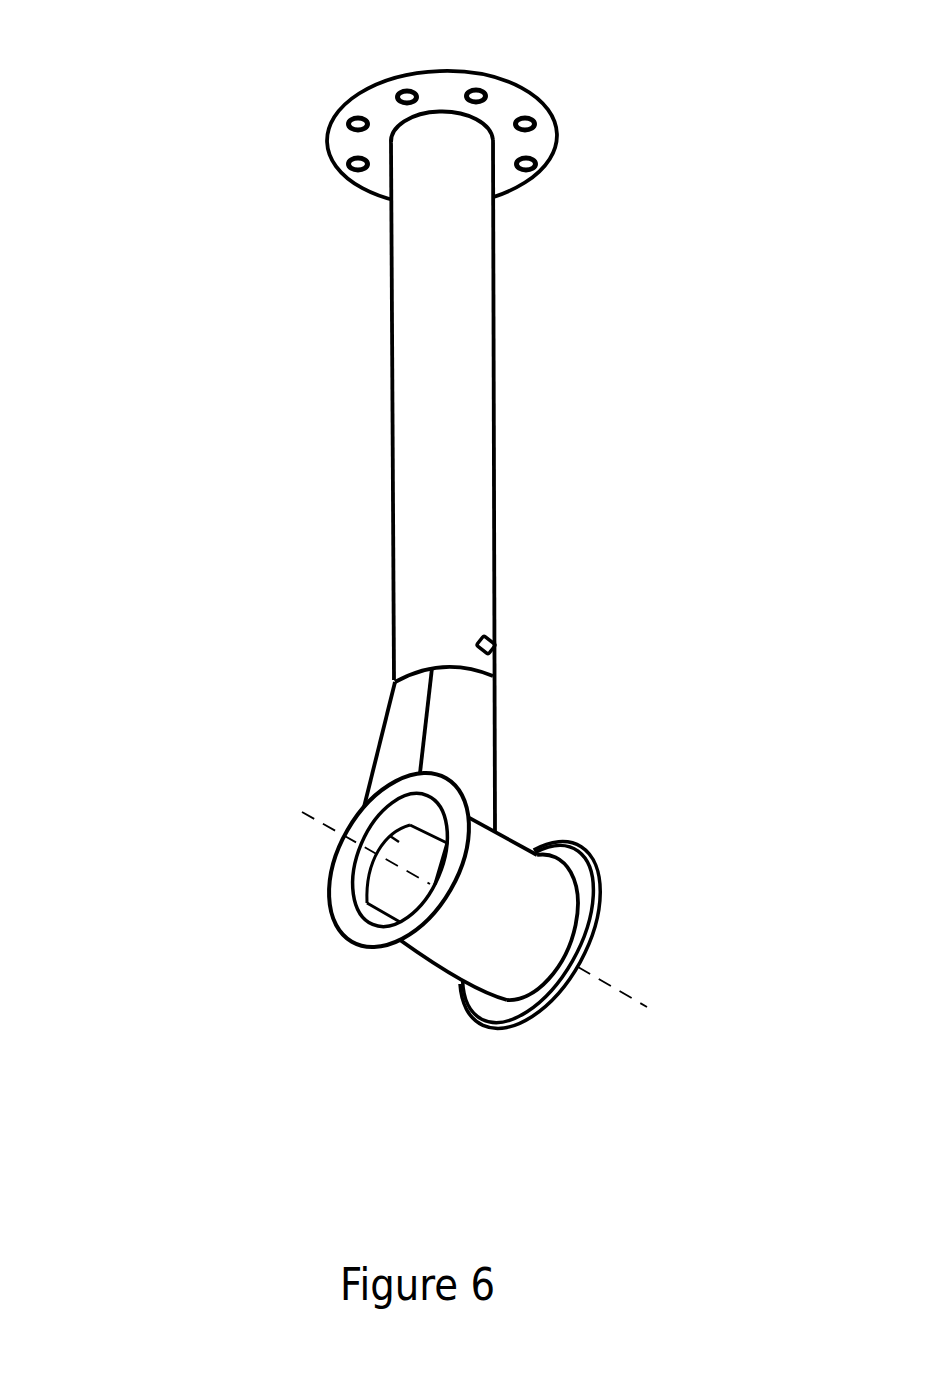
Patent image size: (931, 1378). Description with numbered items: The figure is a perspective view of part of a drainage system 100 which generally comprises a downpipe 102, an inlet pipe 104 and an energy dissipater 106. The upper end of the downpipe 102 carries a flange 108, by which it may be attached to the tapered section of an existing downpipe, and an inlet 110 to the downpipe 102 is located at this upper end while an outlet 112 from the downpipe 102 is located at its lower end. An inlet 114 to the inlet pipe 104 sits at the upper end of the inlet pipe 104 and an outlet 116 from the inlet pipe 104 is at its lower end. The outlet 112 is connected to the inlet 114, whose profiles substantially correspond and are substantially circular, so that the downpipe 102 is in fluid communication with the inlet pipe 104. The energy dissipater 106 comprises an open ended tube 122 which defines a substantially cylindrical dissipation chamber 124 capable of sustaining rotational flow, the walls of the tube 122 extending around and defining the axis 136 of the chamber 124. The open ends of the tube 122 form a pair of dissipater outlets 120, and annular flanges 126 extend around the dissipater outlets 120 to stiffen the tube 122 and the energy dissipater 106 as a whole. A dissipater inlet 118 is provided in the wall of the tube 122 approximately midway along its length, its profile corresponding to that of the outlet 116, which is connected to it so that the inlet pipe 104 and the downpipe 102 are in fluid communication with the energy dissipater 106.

The drainage system 100 is at (270, 74).
The downpipe 102 is at (470, 457).
The inlet pipe 104 is at (385, 732).
The energy dissipater 106 is at (568, 986).
The flange 108 is at (558, 143).
The inlet 110 is at (445, 113).
The outlet 112 is at (447, 670).
The inlet 114 is at (415, 675).
The outlet 116 is at (440, 830).
The dissipater inlet 118 is at (356, 854).
The dissipater outlets 120 is at (359, 812).
The open ended tube 122 is at (433, 970).
The dissipation chamber 124 is at (362, 880).
The annular flanges 126 is at (331, 870).
The axis 136 is at (618, 988).